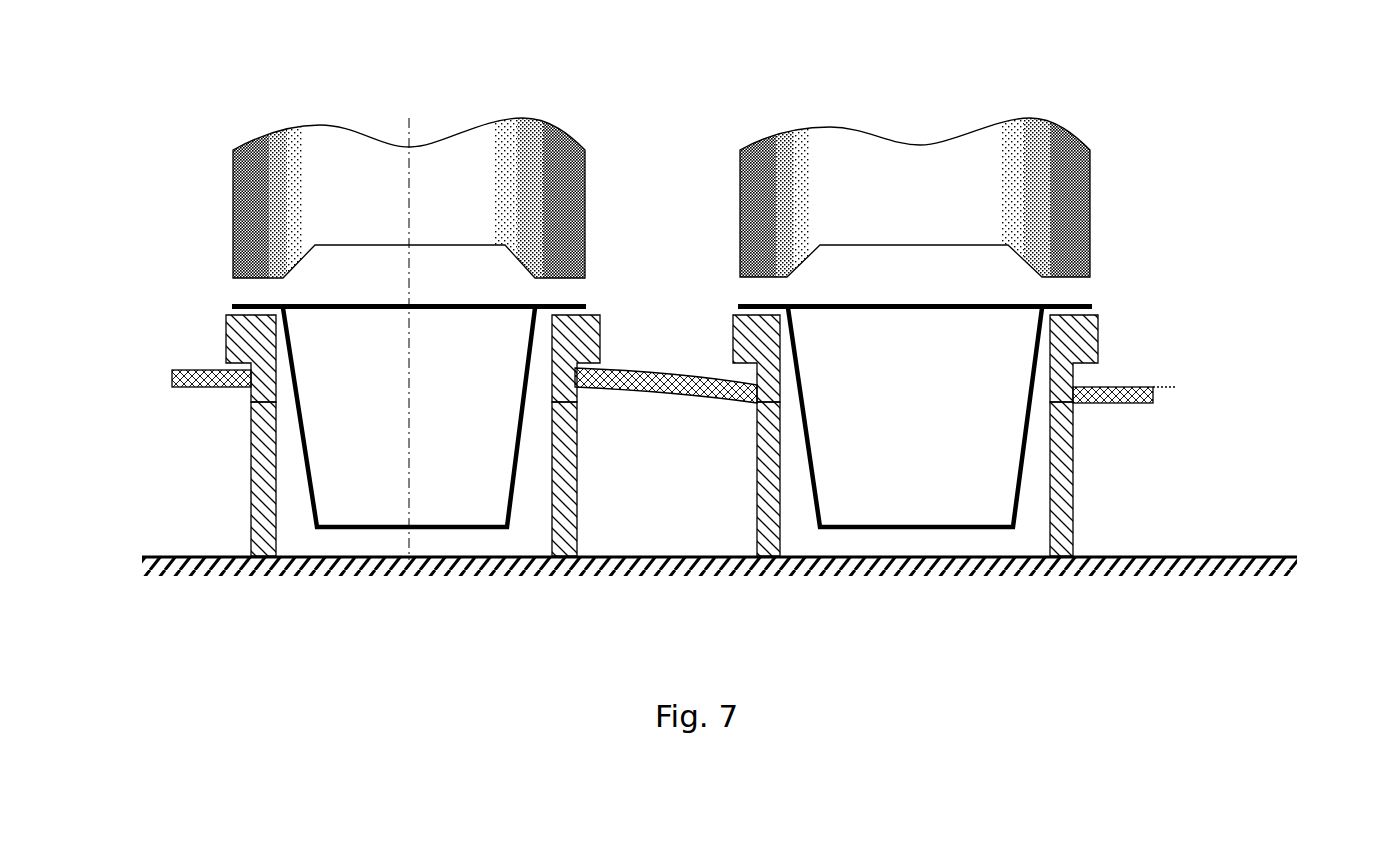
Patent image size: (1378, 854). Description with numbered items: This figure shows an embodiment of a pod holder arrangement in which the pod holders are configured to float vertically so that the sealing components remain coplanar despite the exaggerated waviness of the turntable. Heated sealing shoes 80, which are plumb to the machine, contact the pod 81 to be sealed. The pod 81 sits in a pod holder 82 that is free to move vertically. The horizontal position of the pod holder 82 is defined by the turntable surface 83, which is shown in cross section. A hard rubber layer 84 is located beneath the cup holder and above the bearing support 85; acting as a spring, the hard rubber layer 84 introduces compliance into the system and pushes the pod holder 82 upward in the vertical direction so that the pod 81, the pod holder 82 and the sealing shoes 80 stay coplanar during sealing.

The heated sealing shoe 80 is at (583, 147).
The pod 81 is at (463, 305).
The pod holder 82 is at (602, 327).
The turntable surface 83 is at (218, 392).
The hard rubber layer 84 is at (577, 476).
The bearing support 85 is at (1270, 556).